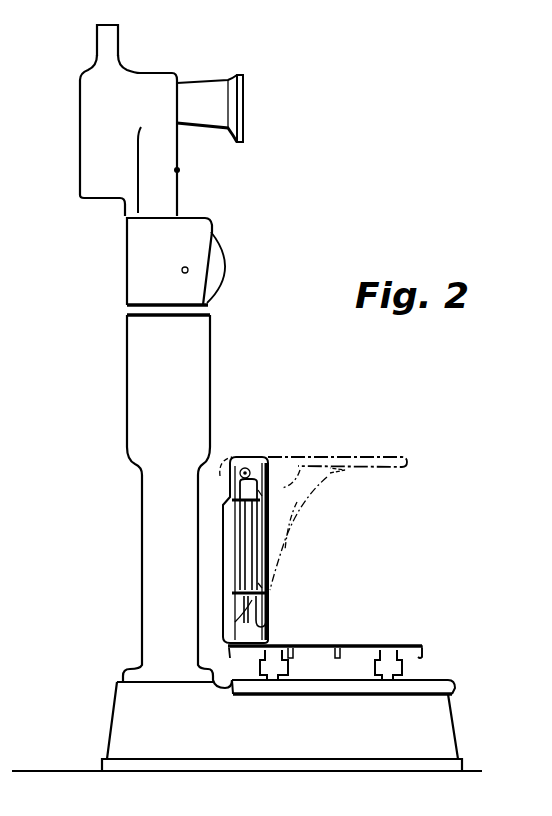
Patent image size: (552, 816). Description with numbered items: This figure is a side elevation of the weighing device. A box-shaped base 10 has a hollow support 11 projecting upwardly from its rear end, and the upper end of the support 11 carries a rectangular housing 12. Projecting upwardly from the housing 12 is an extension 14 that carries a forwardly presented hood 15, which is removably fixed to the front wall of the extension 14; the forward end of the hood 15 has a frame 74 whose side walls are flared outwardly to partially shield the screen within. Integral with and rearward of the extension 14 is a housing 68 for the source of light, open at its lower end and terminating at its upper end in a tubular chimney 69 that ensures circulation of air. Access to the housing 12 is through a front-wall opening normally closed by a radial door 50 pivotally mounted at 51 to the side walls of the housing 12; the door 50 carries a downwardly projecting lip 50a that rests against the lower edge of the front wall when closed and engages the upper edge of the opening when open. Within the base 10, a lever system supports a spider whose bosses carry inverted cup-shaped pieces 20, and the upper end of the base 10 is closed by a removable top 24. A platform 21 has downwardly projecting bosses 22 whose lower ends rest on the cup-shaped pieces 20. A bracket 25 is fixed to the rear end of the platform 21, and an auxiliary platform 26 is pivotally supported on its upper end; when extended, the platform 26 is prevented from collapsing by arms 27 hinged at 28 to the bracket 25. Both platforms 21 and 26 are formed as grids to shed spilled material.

The base 10 is at (440, 722).
The hollow support 11 is at (147, 569).
The rectangular housing 12 is at (140, 263).
The extension 14 is at (162, 173).
The hood 15 is at (197, 93).
The inverted cup-shaped pieces 20 is at (348, 671).
The platform 21 is at (398, 645).
The downwardly projecting bosses 22 is at (423, 654).
The removable top 24 is at (450, 687).
The bracket 25 is at (272, 617).
The auxiliary platform 26 is at (268, 560).
The arms 27 is at (247, 543).
The hinge 28 is at (260, 493).
The radial door 50 is at (220, 265).
The lip 50a is at (208, 303).
The pivot 51 is at (187, 273).
The housing 68 is at (87, 148).
The chimney 69 is at (103, 42).
The frame 74 is at (235, 128).